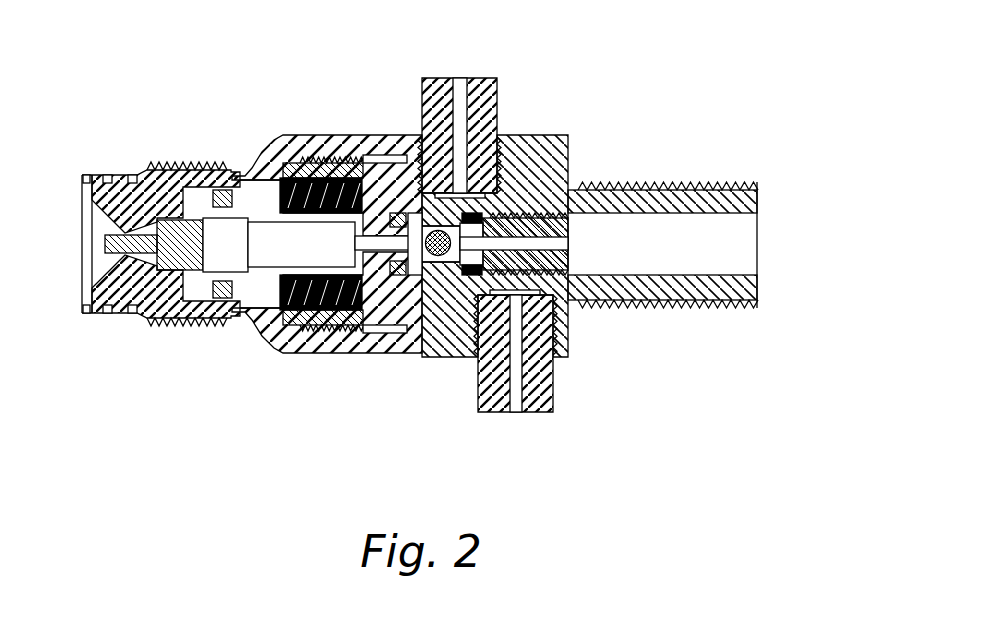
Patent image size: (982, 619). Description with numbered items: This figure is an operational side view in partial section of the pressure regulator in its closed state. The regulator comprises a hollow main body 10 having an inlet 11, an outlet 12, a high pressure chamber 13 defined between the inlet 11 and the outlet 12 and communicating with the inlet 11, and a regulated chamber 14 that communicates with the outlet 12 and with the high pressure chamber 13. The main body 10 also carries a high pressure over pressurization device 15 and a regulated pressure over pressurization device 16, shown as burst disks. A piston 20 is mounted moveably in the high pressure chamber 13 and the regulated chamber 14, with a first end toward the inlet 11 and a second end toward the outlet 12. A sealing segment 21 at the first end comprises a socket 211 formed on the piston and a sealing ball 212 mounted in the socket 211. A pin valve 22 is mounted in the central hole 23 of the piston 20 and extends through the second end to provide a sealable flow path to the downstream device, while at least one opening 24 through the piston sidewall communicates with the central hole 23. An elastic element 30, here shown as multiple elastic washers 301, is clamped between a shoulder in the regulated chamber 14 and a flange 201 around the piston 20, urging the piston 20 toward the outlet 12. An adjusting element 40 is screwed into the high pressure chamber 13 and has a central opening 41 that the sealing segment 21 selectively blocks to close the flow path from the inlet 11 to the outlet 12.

The main body 10 is at (757, 163).
The inlet 11 is at (740, 250).
The outlet 12 is at (100, 228).
The high pressure chamber 13 is at (433, 262).
The regulated chamber 14 is at (190, 196).
The high pressure over pressurization device 15 is at (538, 412).
The regulated pressure over pressurization device 16 is at (478, 78).
The piston 20 is at (243, 197).
The flange 201 is at (267, 200).
The sealing segment 21 is at (430, 212).
The socket 211 is at (423, 276).
The sealing ball 212 is at (442, 213).
The pin valve 22 is at (188, 292).
The central hole 23 is at (241, 302).
The opening 24 is at (365, 334).
The elastic element 30 is at (314, 333).
The spring 301 is at (310, 180).
The adjusting element 40 is at (553, 217).
The central opening 41 is at (362, 157).